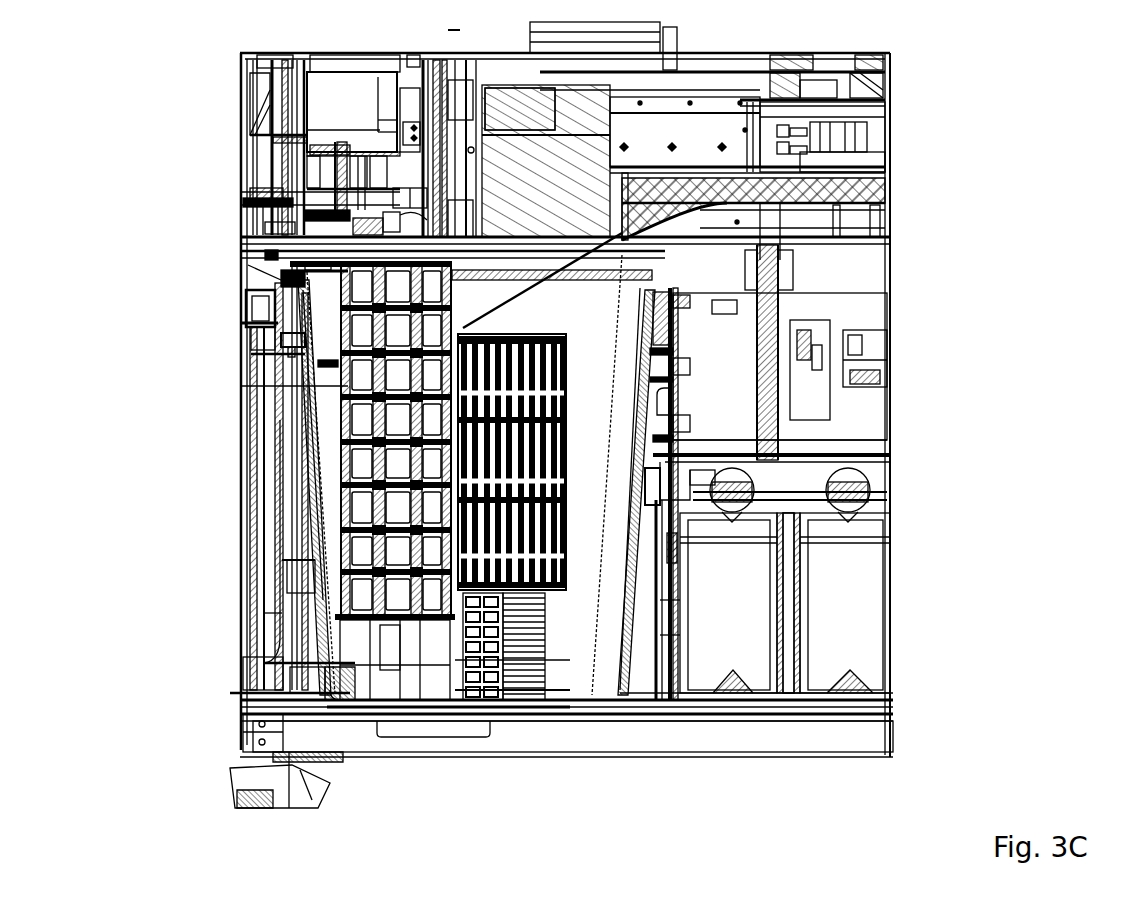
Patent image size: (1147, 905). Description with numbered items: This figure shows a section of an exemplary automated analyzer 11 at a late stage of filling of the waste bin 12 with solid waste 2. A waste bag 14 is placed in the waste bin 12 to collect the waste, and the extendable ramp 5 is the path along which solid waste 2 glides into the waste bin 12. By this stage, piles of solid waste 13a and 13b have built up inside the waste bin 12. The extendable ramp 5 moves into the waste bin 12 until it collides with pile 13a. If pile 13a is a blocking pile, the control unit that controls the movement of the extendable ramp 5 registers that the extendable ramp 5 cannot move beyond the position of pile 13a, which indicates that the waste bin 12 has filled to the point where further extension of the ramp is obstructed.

The solid waste 2 is at (363, 368).
The extendable ramp 5 is at (463, 328).
The automated analyzer 11 is at (923, 430).
The waste bin 12 is at (315, 500).
The pile of solid waste 13a is at (243, 187).
The pile of solid waste 13b is at (243, 265).
The waste bag 14 is at (307, 388).